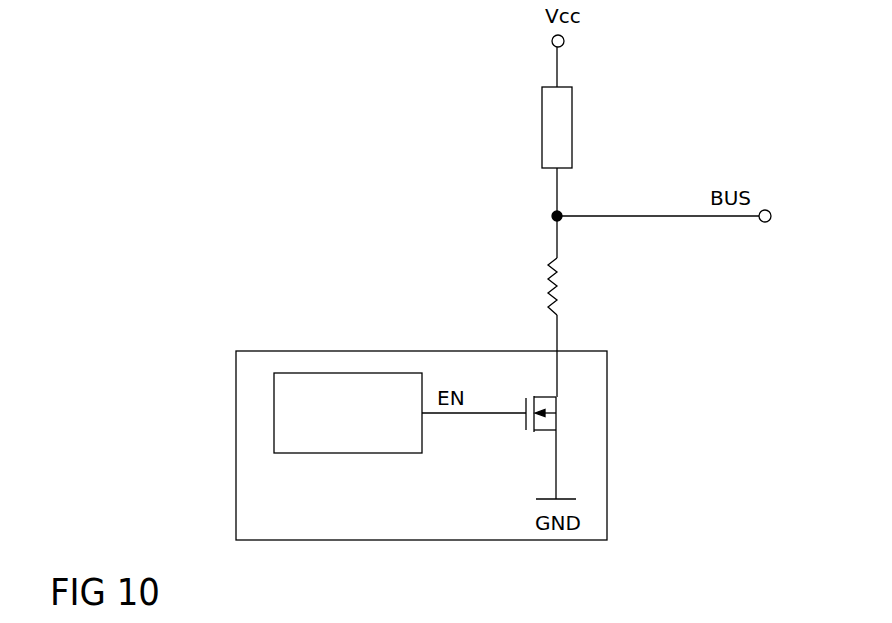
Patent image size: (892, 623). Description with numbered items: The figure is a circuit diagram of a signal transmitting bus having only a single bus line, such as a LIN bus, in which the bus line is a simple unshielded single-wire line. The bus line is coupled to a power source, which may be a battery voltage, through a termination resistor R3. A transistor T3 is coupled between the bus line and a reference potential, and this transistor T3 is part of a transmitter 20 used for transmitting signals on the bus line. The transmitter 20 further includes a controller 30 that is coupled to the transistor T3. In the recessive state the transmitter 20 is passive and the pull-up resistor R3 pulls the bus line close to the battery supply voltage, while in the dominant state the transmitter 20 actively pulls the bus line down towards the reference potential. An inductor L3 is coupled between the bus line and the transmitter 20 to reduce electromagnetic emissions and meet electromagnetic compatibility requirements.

The transmitter 20 is at (283, 350).
The controller 30 is at (343, 372).
The termination resistor R3 is at (537, 127).
The inductor L3 is at (528, 286).
The transistor T3 is at (559, 447).